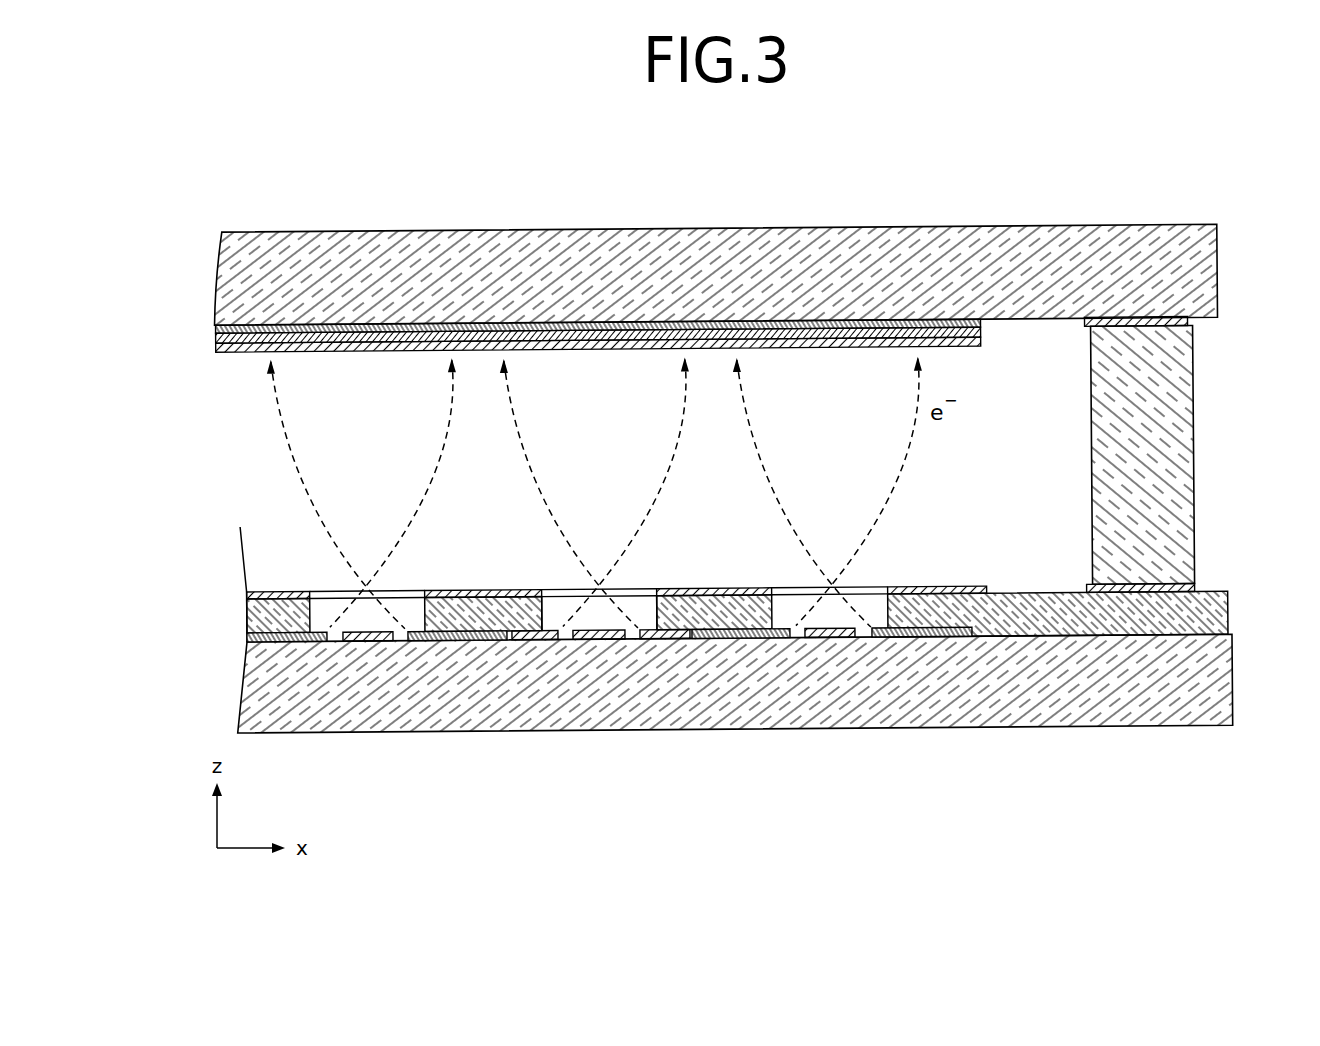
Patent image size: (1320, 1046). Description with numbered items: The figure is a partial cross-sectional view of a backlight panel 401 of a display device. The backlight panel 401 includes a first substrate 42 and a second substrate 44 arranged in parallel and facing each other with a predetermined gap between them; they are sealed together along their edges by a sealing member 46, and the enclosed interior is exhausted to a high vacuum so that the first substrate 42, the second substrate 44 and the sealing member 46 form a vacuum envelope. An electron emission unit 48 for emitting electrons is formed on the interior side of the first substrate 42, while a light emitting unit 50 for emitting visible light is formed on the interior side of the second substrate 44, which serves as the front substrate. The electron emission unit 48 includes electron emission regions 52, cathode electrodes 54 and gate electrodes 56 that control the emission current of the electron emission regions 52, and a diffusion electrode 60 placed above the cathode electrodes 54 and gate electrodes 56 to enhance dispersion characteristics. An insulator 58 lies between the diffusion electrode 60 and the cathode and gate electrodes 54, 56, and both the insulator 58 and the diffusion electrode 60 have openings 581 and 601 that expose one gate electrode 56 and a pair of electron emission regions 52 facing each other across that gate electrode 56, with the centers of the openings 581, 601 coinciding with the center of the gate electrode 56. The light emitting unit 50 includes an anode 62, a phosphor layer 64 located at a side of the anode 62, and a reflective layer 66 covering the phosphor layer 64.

The backlight panel 401 is at (833, 147).
The first substrate 42 is at (953, 712).
The second substrate 44 is at (415, 250).
The sealing member 46 is at (1177, 453).
The electron emission unit 48 is at (614, 647).
The light emitting unit 50 is at (598, 298).
The electron emission region 52 is at (532, 640).
The cathode electrode 54 is at (473, 640).
The gate electrode 56 is at (833, 640).
The insulator 58 is at (1045, 622).
The opening 581 is at (638, 605).
The diffusion electrode 60 is at (470, 597).
The opening 601 is at (563, 597).
The anode 62 is at (623, 325).
The phosphor layer 64 is at (692, 334).
The reflective layer 66 is at (770, 347).